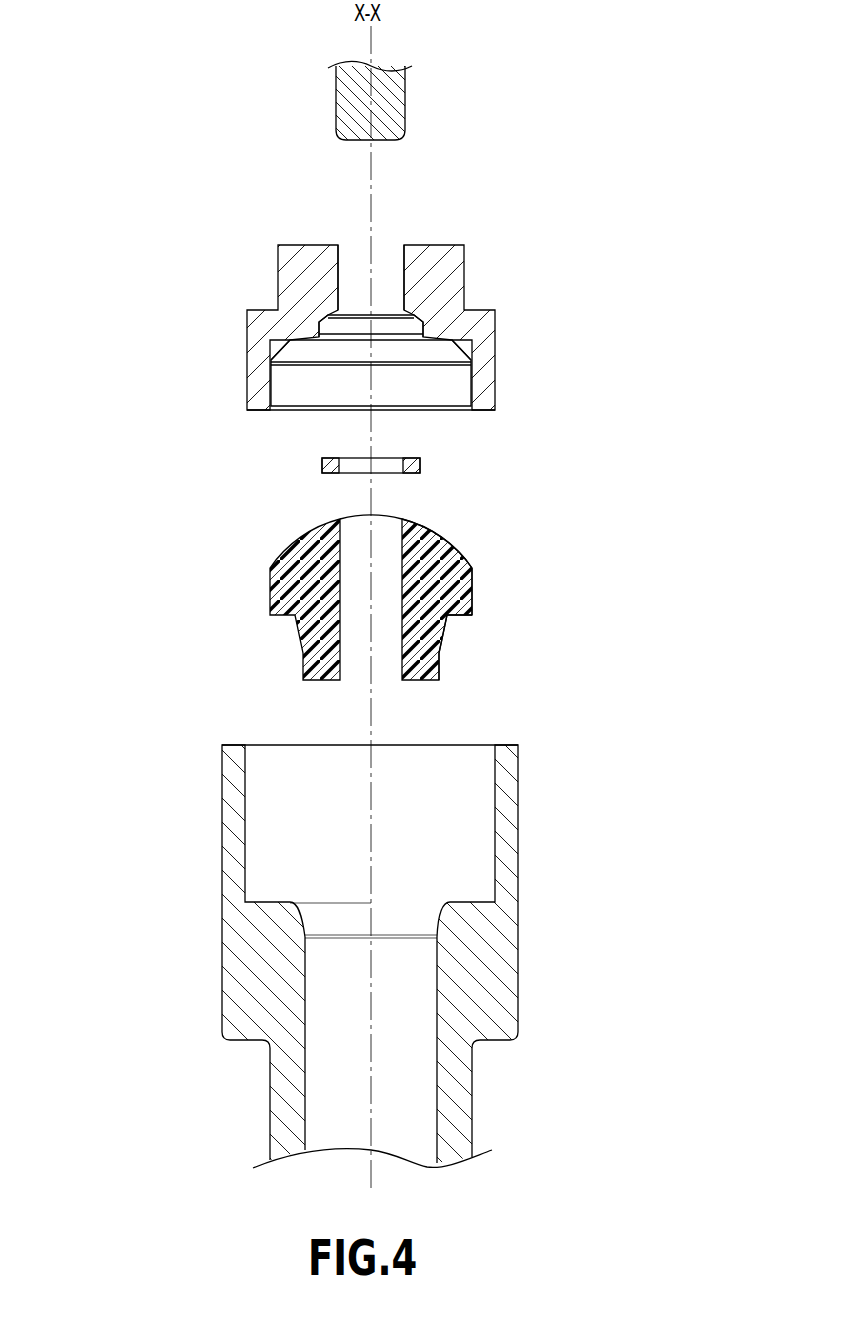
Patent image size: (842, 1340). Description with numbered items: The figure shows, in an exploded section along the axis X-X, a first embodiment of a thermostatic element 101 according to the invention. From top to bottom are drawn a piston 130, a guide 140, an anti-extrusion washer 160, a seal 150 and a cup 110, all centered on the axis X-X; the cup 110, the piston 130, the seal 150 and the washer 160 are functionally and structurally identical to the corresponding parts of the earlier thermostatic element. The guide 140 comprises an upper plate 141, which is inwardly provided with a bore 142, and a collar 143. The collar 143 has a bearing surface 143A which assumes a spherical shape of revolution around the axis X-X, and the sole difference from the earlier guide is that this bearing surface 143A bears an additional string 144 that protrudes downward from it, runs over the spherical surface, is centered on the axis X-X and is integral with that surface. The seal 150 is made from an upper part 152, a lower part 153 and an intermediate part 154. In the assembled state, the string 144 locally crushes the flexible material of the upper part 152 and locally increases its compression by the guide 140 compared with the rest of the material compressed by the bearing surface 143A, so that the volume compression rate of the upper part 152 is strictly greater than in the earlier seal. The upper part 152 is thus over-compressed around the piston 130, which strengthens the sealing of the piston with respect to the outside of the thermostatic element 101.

The thermostatic element 101 is at (88, 96).
The cup 110 is at (210, 877).
The piston 130 is at (322, 105).
The guide 140 is at (238, 322).
The upper plate 141 is at (444, 254).
The bore 142 is at (395, 261).
The collar 143 is at (482, 352).
The bearing surface 143A is at (287, 354).
The string 144 is at (466, 352).
The seal 150 is at (250, 597).
The upper part 152 is at (433, 542).
The lower part 153 is at (457, 617).
The intermediate part 154 is at (474, 581).
The anti-extrusion washer 160 is at (320, 465).